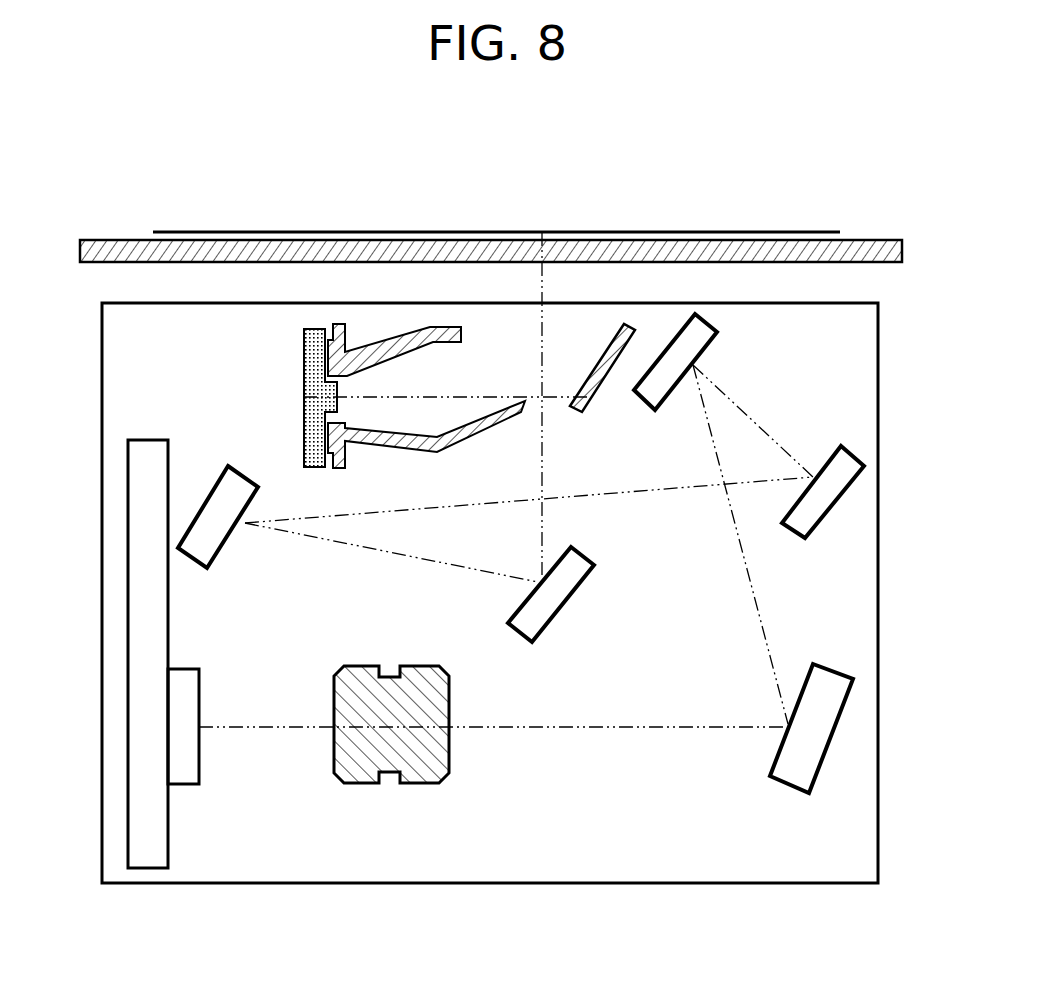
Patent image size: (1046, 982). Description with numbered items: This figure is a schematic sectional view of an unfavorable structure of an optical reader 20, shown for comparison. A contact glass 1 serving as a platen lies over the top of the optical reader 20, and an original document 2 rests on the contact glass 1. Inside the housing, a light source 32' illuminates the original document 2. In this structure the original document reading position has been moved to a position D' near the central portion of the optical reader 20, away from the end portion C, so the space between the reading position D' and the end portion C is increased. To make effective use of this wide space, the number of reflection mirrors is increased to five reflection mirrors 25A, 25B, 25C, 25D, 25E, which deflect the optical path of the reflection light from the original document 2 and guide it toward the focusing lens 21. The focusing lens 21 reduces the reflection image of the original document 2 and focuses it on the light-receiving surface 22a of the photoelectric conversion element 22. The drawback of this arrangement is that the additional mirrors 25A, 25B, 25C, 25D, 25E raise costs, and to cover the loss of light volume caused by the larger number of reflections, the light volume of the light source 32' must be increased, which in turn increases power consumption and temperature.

The contact glass 1 is at (150, 244).
The original document 2 is at (393, 232).
The light source 32' is at (445, 313).
The optical reader 20 is at (102, 348).
The focusing lens 21 is at (420, 768).
The photoelectric conversion element 22 is at (150, 857).
The light-receiving surface 22a is at (180, 727).
The reflection mirror 25A is at (565, 605).
The reflection mirror 25B is at (217, 503).
The reflection mirror 25C is at (835, 512).
The reflection mirror 25D is at (717, 338).
The reflection mirror 25E is at (792, 777).
The end portion C is at (878, 412).
The original document reading position D' is at (548, 387).